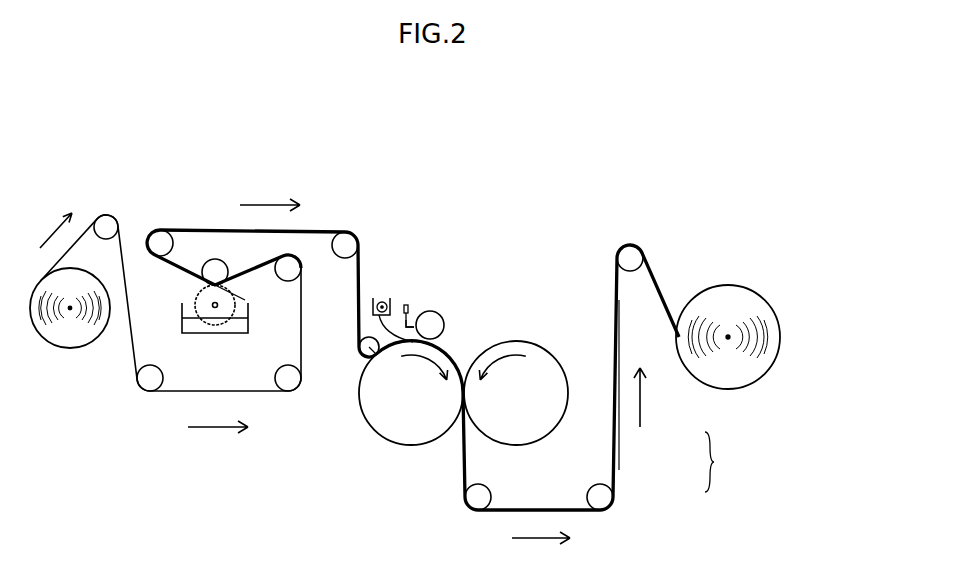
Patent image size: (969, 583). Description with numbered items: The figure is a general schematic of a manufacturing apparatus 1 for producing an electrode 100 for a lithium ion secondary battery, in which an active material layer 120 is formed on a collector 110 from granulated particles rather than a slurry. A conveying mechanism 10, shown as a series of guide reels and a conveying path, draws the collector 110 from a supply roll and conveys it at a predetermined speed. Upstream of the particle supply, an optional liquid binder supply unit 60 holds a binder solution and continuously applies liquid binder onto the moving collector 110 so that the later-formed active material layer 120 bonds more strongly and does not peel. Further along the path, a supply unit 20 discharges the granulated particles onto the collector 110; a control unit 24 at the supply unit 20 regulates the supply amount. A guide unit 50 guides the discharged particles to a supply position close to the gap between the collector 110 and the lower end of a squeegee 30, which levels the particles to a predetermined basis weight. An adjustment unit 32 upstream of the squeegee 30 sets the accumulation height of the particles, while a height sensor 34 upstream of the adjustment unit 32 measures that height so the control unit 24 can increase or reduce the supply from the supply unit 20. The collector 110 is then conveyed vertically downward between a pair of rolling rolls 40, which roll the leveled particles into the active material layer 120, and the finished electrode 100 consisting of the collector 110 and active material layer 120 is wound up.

The manufacturing apparatus 1 is at (729, 128).
The conveying mechanism 10 is at (153, 229).
The supply unit 20 is at (381, 297).
The control unit 24 is at (398, 264).
The squeegee 30 is at (443, 320).
The adjustment unit 32 is at (415, 323).
The height sensor 34 is at (408, 303).
The rolling rolls 40 is at (360, 412).
The guide unit 50 is at (380, 325).
The liquid binder supply unit 60 is at (205, 335).
The electrode 100 is at (758, 288).
The collector 110 is at (70, 350).
The active material layer 120 is at (618, 462).